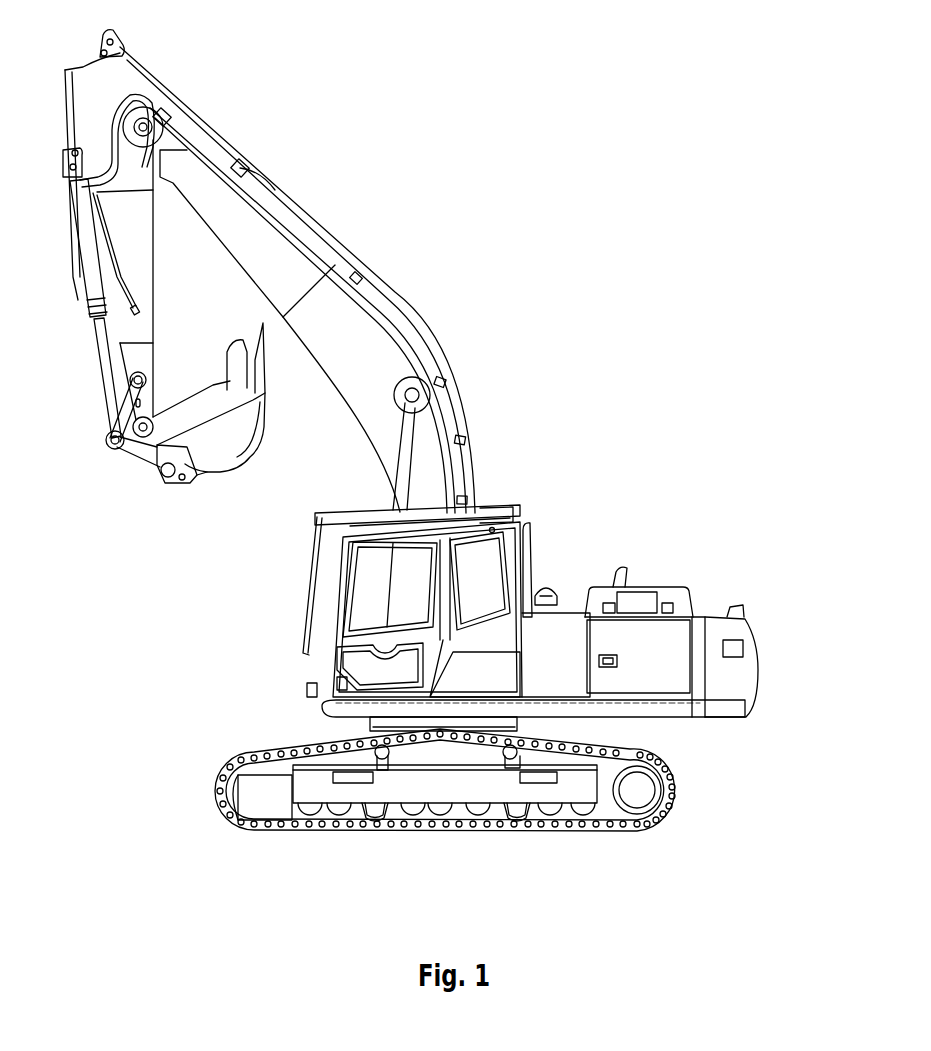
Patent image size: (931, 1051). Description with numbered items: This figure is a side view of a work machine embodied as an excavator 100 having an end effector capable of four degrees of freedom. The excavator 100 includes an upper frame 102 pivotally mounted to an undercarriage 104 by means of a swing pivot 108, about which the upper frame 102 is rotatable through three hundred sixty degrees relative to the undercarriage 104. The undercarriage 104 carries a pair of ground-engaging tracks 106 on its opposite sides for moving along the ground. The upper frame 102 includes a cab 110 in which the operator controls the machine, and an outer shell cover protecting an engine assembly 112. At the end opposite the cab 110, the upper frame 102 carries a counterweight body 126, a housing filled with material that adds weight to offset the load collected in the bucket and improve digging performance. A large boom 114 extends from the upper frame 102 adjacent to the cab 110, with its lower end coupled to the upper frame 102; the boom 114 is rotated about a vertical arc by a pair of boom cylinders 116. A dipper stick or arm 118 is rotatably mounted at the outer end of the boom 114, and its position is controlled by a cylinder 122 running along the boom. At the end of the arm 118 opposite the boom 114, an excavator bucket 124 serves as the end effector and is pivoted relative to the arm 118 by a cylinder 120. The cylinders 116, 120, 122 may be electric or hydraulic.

The excavator 100 is at (594, 160).
The upper frame 102 is at (702, 581).
The undercarriage 104 is at (678, 831).
The ground-engaging tracks 106 is at (212, 800).
The swing pivot 108 is at (443, 720).
The cab 110 is at (487, 575).
The engine assembly 112 is at (639, 577).
The boom 114 is at (297, 262).
The boom cylinders 116 is at (397, 452).
The dipper stick or arm 118 is at (134, 256).
The cylinder 120 is at (82, 273).
The cylinder 122 is at (176, 102).
The excavator bucket 124 is at (223, 470).
The counterweight body 126 is at (758, 690).